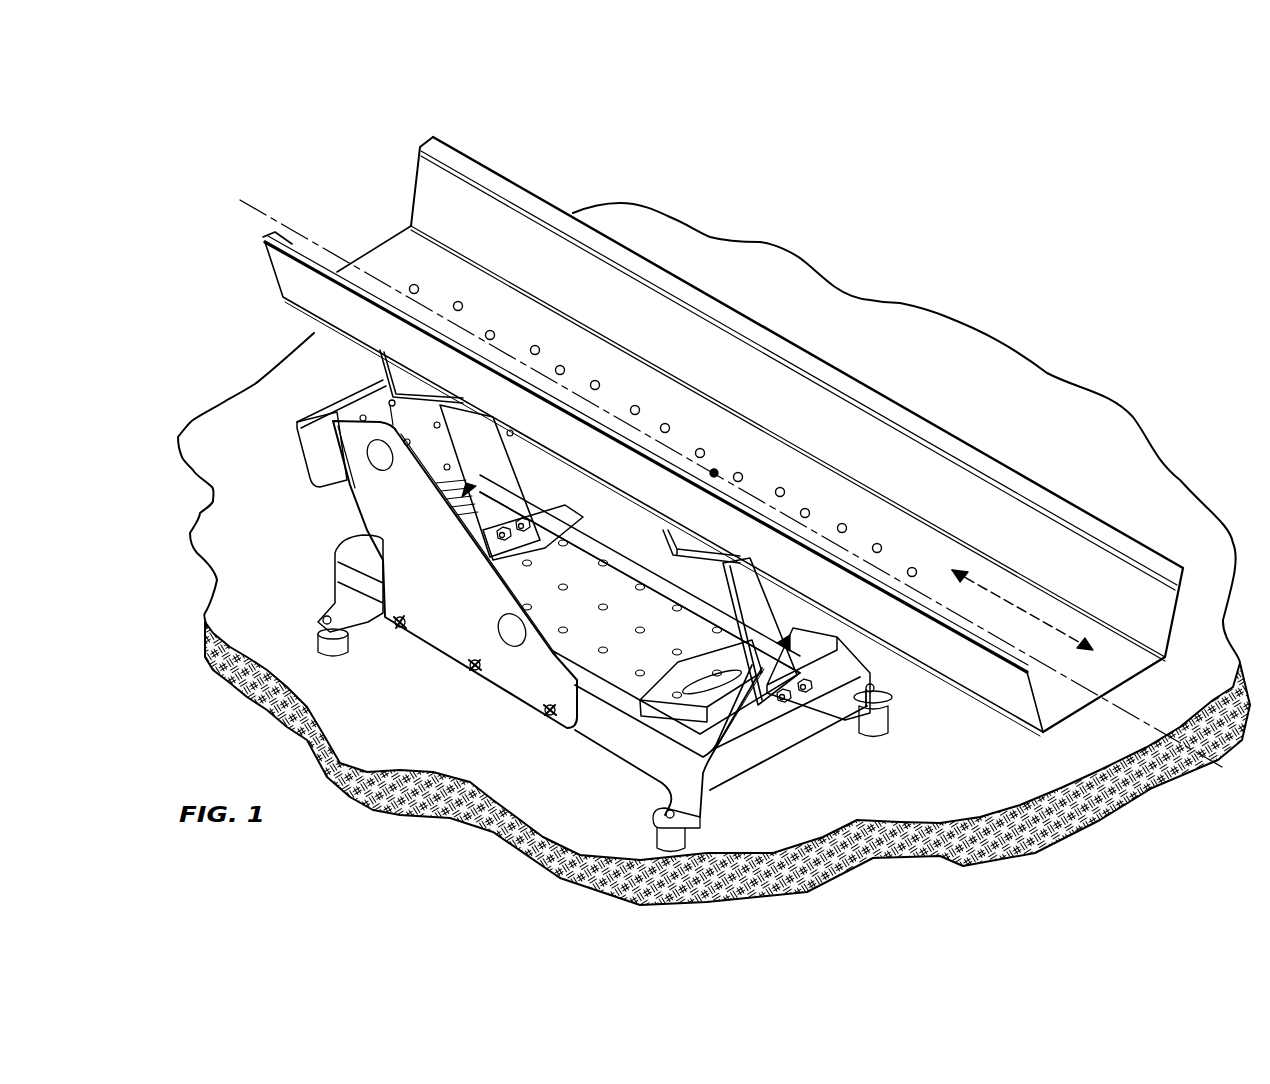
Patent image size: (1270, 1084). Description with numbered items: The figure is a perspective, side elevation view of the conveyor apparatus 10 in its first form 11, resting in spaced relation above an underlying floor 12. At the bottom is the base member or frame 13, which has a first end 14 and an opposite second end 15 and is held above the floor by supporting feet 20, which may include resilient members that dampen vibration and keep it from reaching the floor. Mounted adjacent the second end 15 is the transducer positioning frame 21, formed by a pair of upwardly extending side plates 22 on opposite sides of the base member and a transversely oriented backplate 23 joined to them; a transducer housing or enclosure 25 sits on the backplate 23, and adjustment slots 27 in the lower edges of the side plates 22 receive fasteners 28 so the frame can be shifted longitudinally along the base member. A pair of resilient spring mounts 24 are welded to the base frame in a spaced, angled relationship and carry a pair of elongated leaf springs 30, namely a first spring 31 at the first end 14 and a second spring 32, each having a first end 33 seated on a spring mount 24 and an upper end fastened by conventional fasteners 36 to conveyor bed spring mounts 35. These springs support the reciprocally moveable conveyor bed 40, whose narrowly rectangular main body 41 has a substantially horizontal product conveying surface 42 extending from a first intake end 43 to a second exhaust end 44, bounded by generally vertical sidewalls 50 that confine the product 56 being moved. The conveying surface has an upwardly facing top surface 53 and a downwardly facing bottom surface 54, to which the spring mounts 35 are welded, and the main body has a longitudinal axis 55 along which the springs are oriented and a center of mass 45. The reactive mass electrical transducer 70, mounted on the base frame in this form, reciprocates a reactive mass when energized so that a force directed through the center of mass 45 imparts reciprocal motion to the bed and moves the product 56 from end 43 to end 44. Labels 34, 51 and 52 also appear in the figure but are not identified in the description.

The conveyor apparatus 10 is at (965, 357).
The first form of the apparatus 11 is at (1080, 497).
The underlying floor 12 is at (955, 779).
The base member or frame 13 is at (603, 741).
The first end 14 is at (710, 765).
The second end 15 is at (337, 583).
The supporting feet 20 is at (853, 700).
The transducer mounting or positioning frame 21 is at (505, 673).
The side plates 22 is at (590, 490).
The backplate 23 is at (340, 490).
The resilient spring mounts 24 is at (577, 513).
The transducer housing or enclosure 25 is at (323, 467).
The adjustment slots 27 is at (549, 706).
The fasteners 28 is at (402, 618).
The leaf springs 30 is at (474, 488).
The first spring 31 is at (769, 610).
The second spring 32 is at (485, 444).
The first end 33 is at (745, 722).
The upper spring attachment 34 is at (727, 588).
The conveyor bed spring mounts 35 is at (425, 387).
The fasteners 36 is at (520, 512).
The reciprocally moveable conveyor bed 40 is at (731, 496).
The main body 41 is at (761, 397).
The product conveying surface 42 is at (928, 560).
The first intake end 43 is at (392, 255).
The second exhaust end 44 is at (1125, 660).
The center of mass 45 is at (716, 470).
The sidewalls 50 is at (1007, 460).
The back wall lower portion 51 is at (927, 480).
The front flange bend 52 is at (642, 470).
The top surface 53 is at (585, 360).
The bottom surface 54 is at (1082, 710).
The longitudinal axis 55 is at (290, 217).
The product 56 is at (843, 526).
The reactive mass electrical transducer 70 is at (338, 393).